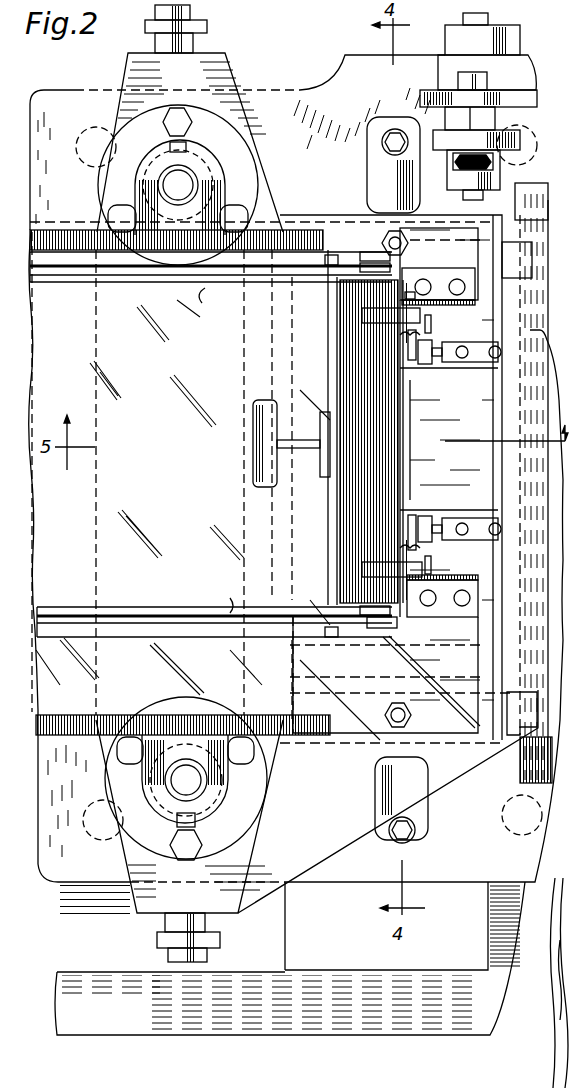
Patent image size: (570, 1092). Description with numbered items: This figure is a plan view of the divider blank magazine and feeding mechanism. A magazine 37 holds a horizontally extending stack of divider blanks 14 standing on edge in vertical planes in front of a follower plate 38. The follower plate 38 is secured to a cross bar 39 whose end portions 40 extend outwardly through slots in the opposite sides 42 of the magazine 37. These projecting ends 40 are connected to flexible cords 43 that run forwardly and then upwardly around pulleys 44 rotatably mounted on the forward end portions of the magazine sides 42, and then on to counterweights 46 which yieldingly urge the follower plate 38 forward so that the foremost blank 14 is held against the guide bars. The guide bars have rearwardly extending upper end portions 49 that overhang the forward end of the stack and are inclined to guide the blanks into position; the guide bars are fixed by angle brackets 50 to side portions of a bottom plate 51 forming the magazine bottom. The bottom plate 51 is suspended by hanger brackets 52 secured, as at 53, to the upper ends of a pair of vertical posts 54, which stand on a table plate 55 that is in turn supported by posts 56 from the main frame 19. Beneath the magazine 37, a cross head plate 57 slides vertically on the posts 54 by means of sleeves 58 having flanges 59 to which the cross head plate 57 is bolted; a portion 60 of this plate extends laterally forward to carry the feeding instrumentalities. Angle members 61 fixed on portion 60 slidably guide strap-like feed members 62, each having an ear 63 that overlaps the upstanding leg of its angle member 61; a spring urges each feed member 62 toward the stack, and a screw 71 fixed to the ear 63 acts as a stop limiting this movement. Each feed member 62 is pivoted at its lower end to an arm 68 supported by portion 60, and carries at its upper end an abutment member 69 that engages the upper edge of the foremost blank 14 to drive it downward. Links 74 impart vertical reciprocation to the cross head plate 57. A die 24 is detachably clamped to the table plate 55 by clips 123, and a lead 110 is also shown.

The divider blank 14 is at (380, 437).
The main frame 19 is at (300, 1035).
The die 24 is at (525, 752).
The magazine 37 is at (145, 285).
The follower plate 38 is at (330, 488).
The cross bar 39 is at (330, 398).
The end portion of cross bar 40 is at (330, 255).
The side of magazine 42 is at (211, 459).
The flexible cord 43 is at (68, 283).
The pulley 44 is at (393, 258).
The counterweight 46 is at (431, 322).
The upper end portion of guide bar 49 is at (362, 314).
The angle bracket 50 is at (442, 280).
The bottom plate 51 is at (560, 945).
The hanger bracket 52 is at (66, 226).
The securing means of hanger bracket 53 is at (138, 165).
The vertical post 54 is at (190, 175).
The table plate 55 is at (338, 80).
The post 56 is at (100, 127).
The cross head plate 57 is at (278, 170).
The sleeve 58 is at (162, 160).
The flange 59 is at (255, 158).
The plate portion 60 is at (505, 478).
The angle member 61 is at (488, 362).
The feed member 62 is at (418, 335).
The ear 63 is at (432, 365).
The arm 68 is at (480, 385).
The abutment member 69 is at (405, 335).
The screw 71 is at (443, 363).
The link 74 is at (207, 25).
The lead wire 110 is at (412, 460).
The clip 123 is at (380, 170).